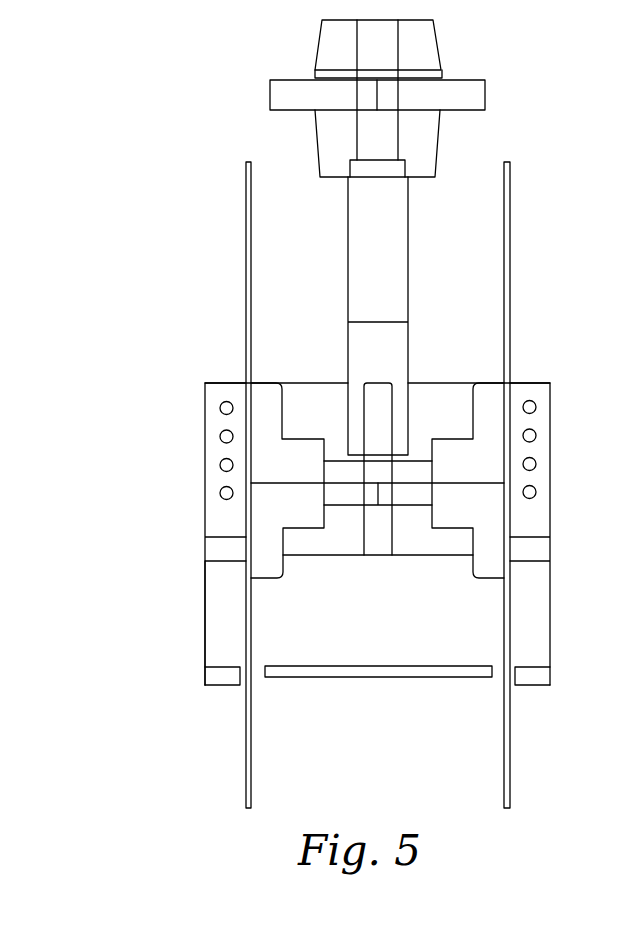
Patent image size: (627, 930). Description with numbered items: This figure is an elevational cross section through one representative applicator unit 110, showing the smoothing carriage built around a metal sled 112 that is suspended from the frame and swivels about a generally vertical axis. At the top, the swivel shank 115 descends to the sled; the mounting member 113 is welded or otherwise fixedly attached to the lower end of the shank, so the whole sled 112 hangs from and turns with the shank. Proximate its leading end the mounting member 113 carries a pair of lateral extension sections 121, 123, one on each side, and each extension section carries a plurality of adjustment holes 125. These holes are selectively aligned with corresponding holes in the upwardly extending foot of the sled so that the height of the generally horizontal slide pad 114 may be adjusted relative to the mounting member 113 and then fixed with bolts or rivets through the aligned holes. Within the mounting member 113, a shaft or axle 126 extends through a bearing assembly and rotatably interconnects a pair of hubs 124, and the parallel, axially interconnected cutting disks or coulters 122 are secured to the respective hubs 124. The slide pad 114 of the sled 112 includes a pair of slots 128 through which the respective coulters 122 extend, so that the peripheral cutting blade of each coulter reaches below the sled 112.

The applicator unit 110 is at (156, 238).
The sled 112 is at (203, 567).
The mounting member 113 is at (365, 557).
The slide pad 114 is at (323, 677).
The swivel shank 115 is at (448, 250).
The lateral extension section 121 is at (211, 418).
The coulter 122 is at (245, 201).
The lateral extension section 123 is at (543, 421).
The hub 124 is at (272, 383).
The adjustment holes 125 is at (218, 492).
The shaft or axle 126 is at (333, 460).
The slots 128 is at (242, 685).